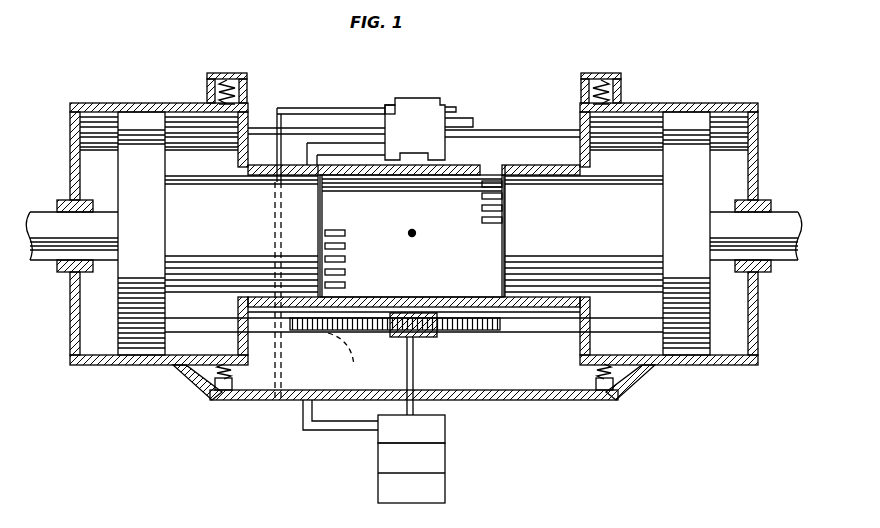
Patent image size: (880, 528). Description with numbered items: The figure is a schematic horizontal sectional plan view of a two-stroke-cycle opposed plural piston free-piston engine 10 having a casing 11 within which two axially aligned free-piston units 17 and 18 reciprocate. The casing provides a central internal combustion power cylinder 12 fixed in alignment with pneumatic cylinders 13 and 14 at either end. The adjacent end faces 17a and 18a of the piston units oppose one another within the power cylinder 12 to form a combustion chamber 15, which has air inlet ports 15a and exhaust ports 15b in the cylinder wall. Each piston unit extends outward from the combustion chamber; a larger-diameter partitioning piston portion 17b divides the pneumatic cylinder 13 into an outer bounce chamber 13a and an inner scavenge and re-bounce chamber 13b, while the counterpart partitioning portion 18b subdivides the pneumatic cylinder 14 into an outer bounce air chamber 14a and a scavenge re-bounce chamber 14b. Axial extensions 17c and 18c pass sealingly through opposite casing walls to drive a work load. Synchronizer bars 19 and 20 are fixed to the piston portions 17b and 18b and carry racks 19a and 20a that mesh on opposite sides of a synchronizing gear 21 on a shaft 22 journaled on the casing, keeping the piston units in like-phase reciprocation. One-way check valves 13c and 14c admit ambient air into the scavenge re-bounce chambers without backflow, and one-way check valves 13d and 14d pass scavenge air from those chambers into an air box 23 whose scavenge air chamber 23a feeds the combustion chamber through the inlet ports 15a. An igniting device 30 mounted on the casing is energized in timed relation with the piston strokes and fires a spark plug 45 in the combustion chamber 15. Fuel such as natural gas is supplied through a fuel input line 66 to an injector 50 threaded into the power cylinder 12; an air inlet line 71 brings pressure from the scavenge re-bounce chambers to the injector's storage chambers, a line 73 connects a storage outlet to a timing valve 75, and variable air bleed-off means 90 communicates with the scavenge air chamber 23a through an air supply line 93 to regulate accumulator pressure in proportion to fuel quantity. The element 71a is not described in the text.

The two-stroke-cycle free-piston engine 10 is at (670, 380).
The casing 11 is at (762, 299).
The internal combustion power cylinder 12 is at (458, 168).
The pneumatic cylinder 13 is at (756, 105).
The outer bounce chamber 13a is at (732, 147).
The inner scavenge and re-bounce chamber 13b is at (645, 122).
The valve 13c is at (600, 73).
The one-way check valve 13d is at (612, 400).
The pneumatic cylinder 14 is at (191, 104).
The outer bounce air chamber 14a is at (95, 130).
The scavenge re-bounce chamber 14b is at (249, 122).
The valve 14c is at (226, 74).
The one-way check valve 14d is at (197, 372).
The combustion chamber 15 is at (423, 280).
The air inlet ports 15a is at (340, 247).
The exhaust ports 15b is at (481, 208).
The free-piston unit 17 is at (611, 198).
The end face 17a is at (508, 233).
The cylinder space partitioning piston portion 17b is at (686, 124).
The axial extension 17c is at (782, 212).
The free-piston unit 18 is at (208, 200).
The end face 18a is at (304, 214).
The cylindrical space partitioning portion 18b is at (141, 132).
The axial extension 18c is at (47, 212).
The synchronizer bar 19 is at (528, 350).
The rack 19a is at (356, 359).
The synchronizer bar 20 is at (286, 342).
The rack 20a is at (468, 333).
The synchronizing gear 21 is at (423, 336).
The shaft 22 is at (416, 373).
The air box 23 is at (553, 401).
The scavenge air chamber 23a is at (572, 373).
The igniting device 30 is at (432, 461).
The spark plug 45 is at (408, 237).
The injector 50 is at (420, 112).
The fuel input line 66 is at (483, 148).
The air inlet line 71 is at (540, 130).
The line fitting 71a is at (461, 118).
The line 73 is at (331, 426).
The timing valve 75 is at (432, 437).
The variable air bleed-off means 90 is at (388, 106).
The air supply line 93 is at (307, 112).